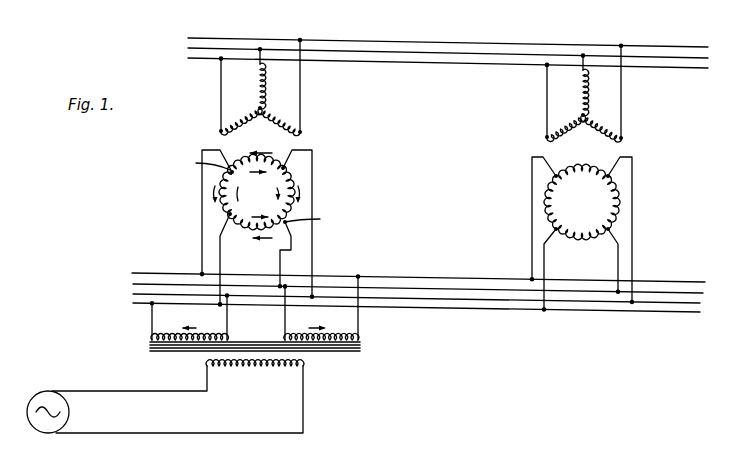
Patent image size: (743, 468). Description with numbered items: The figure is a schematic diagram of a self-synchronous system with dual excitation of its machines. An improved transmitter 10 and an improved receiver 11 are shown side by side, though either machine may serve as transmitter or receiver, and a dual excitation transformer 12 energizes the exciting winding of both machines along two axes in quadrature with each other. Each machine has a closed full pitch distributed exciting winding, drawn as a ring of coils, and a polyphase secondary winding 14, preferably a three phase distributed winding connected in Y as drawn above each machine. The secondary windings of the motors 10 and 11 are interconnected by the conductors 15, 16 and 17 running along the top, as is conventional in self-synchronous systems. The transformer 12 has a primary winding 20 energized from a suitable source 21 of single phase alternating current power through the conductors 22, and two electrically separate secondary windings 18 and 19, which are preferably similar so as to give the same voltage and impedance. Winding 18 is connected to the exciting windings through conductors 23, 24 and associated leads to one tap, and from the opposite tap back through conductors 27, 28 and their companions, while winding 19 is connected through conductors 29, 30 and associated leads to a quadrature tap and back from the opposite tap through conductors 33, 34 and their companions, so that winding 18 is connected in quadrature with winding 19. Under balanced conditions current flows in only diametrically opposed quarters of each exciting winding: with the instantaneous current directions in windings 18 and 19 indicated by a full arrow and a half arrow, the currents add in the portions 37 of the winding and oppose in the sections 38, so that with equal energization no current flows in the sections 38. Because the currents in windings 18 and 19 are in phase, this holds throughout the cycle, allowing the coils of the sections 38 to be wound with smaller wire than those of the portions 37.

The transmitter 10 is at (272, 216).
The receiver 11 is at (593, 226).
The dual excitation transformer 12 is at (274, 334).
The polyphase secondary winding 14 is at (265, 89).
The conductor 15 is at (380, 62).
The conductor 16 is at (418, 52).
The conductor 17 is at (455, 43).
The transformer secondary winding 18 is at (169, 335).
The transformer secondary winding 19 is at (362, 341).
The primary winding 20 is at (250, 368).
The source 21 is at (48, 433).
The conductors 22 is at (122, 432).
The conductor 23 is at (152, 320).
The conductor 24 is at (134, 303).
The conductor 27 is at (134, 294).
The conductor 28 is at (227, 326).
The conductor 29 is at (285, 326).
The conductor 30 is at (135, 284).
The conductor 33 is at (142, 273).
The conductor 34 is at (358, 316).
The portions of the winding 37 is at (259, 191).
The sections of the winding 38 is at (252, 195).